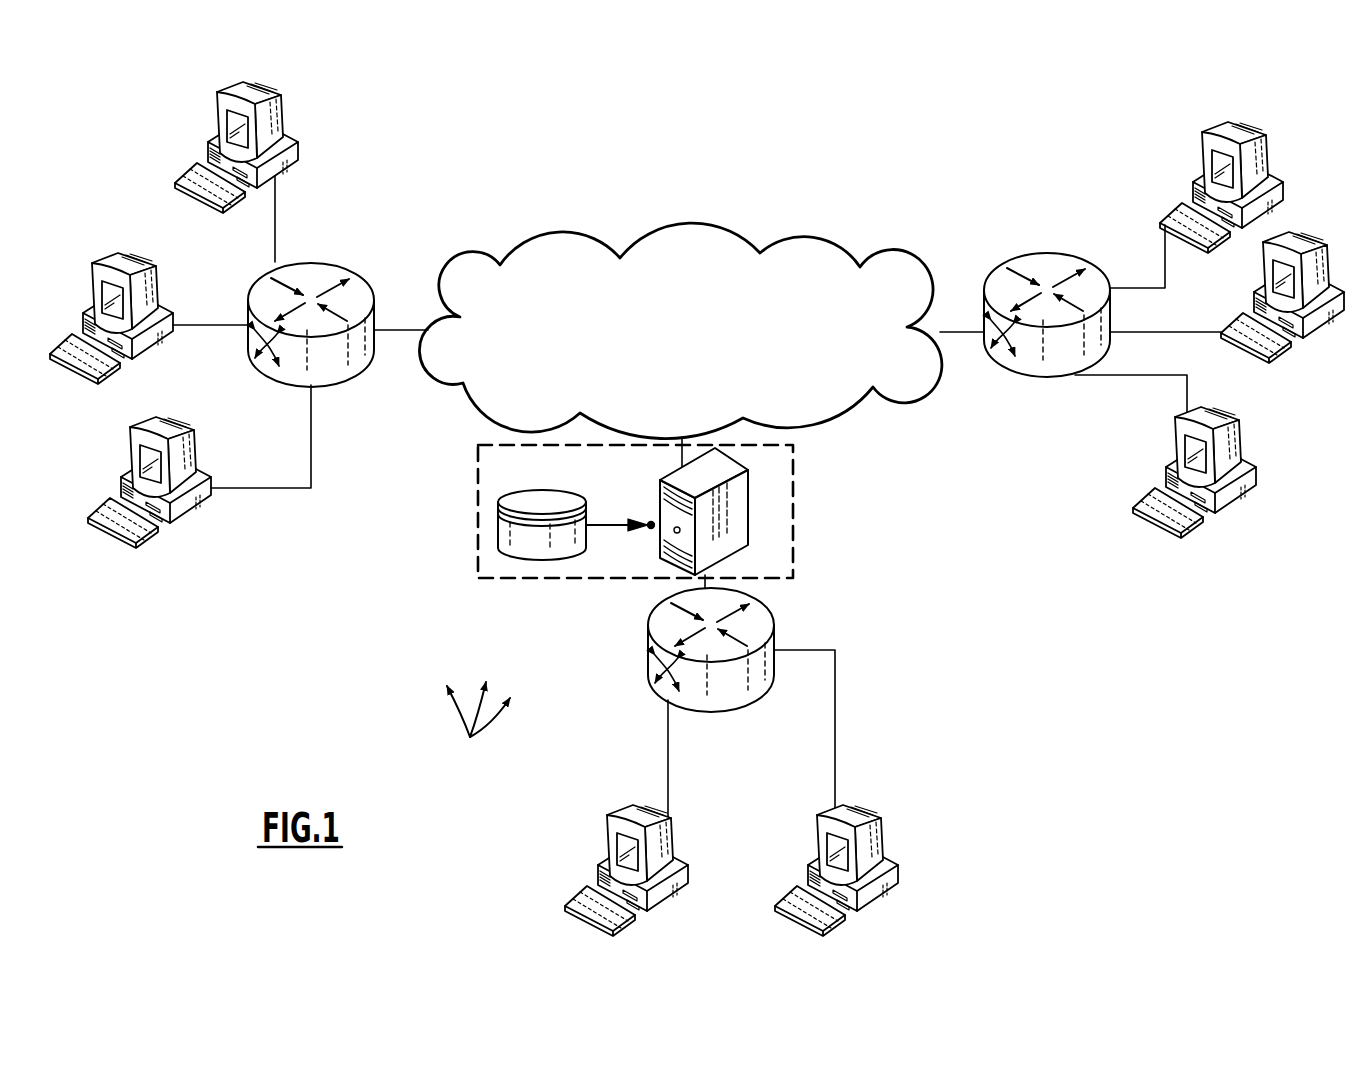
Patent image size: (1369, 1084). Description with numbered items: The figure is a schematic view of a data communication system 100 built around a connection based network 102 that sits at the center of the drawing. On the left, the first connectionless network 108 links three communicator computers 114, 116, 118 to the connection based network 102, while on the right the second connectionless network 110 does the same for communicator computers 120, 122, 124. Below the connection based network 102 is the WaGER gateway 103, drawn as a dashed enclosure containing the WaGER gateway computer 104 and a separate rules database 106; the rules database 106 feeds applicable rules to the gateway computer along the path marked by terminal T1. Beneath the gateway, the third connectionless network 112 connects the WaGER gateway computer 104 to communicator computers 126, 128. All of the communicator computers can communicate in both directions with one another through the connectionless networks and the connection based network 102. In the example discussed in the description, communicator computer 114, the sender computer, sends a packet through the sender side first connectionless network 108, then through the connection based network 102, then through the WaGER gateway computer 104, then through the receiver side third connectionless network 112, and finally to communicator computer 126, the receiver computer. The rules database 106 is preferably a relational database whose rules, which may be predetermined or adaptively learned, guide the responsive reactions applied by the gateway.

The data communication system 100 is at (459, 751).
The connection based network 102 is at (706, 389).
The WaGER gateway 103 is at (488, 583).
The WaGER gateway computer 104 is at (748, 512).
The rules database 106 is at (498, 532).
The first connectionless network 108 is at (337, 262).
The second connectionless network 110 is at (1035, 256).
The third connectionless network 112 is at (762, 612).
The communicator computer 114 is at (268, 96).
The communicator computer 116 is at (144, 270).
The communicator computer 118 is at (183, 436).
The communicator computer 120 is at (1255, 140).
The communicator computer 122 is at (1315, 250).
The communicator computer 124 is at (1232, 503).
The communicator computer 126 is at (610, 812).
The communicator computer 128 is at (873, 812).
The terminal T1 is at (650, 531).